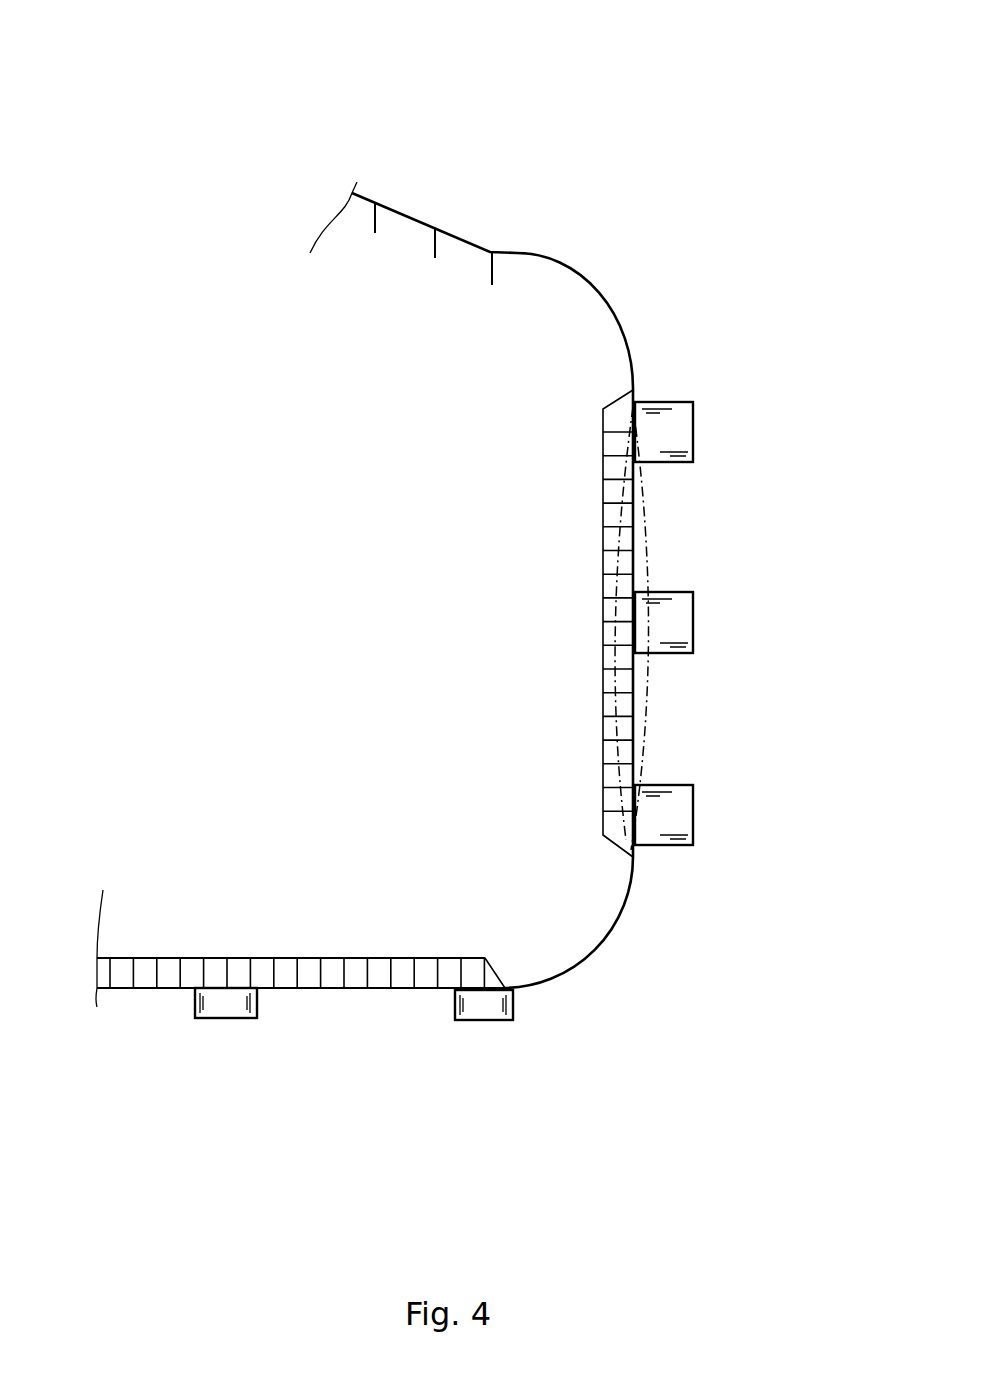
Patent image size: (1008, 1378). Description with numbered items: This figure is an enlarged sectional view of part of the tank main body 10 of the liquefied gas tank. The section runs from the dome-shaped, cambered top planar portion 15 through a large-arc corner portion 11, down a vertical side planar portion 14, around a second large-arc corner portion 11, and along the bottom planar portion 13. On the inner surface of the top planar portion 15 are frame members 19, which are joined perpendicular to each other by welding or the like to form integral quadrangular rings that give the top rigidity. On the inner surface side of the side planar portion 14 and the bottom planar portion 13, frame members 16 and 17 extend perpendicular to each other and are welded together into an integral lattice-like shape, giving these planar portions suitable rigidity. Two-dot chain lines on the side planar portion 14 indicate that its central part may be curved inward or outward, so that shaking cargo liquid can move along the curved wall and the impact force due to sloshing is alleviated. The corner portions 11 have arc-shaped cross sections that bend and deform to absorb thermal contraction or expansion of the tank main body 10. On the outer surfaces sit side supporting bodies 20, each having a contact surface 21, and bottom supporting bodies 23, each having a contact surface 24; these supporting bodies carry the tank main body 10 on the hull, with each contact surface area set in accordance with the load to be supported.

The tank main body 10 is at (520, 249).
The corner portions 11 is at (587, 280).
The bottom planar portion 13 is at (136, 996).
The side planar portions 14 is at (622, 681).
The top planar portion 15 is at (393, 200).
The frame members 16 is at (617, 577).
The frame members 17 is at (620, 662).
The frame members 19 is at (433, 245).
The side supporting body 20 is at (699, 449).
The contact surface 21 is at (695, 415).
The bottom supporting body 23 is at (480, 1026).
The contact surface 24 is at (210, 1020).